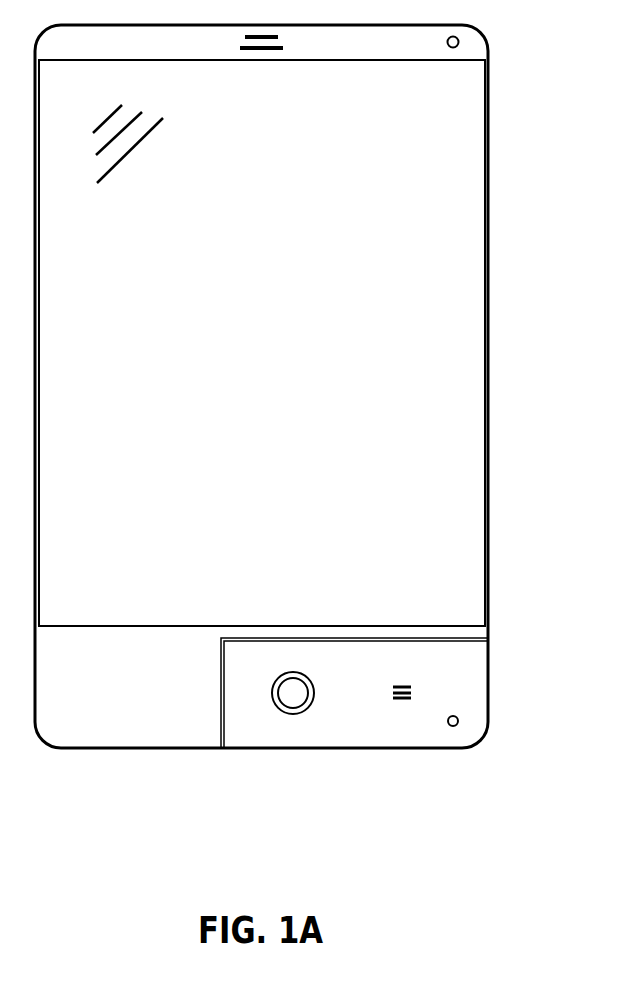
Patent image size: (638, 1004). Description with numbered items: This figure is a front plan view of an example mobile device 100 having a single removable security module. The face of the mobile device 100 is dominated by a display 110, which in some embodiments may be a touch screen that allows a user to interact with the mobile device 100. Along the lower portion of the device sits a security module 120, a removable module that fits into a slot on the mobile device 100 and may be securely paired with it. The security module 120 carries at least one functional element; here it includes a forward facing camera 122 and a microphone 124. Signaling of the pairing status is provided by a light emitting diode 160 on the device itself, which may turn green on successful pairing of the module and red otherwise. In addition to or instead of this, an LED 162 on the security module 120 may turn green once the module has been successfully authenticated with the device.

The mobile device 100 is at (489, 222).
The display 110 is at (475, 312).
The security module 120 is at (489, 677).
The forward facing camera 122 is at (300, 700).
The microphone 124 is at (403, 702).
The light emitting diode (LED) 160 is at (459, 40).
The LED 162 is at (459, 720).